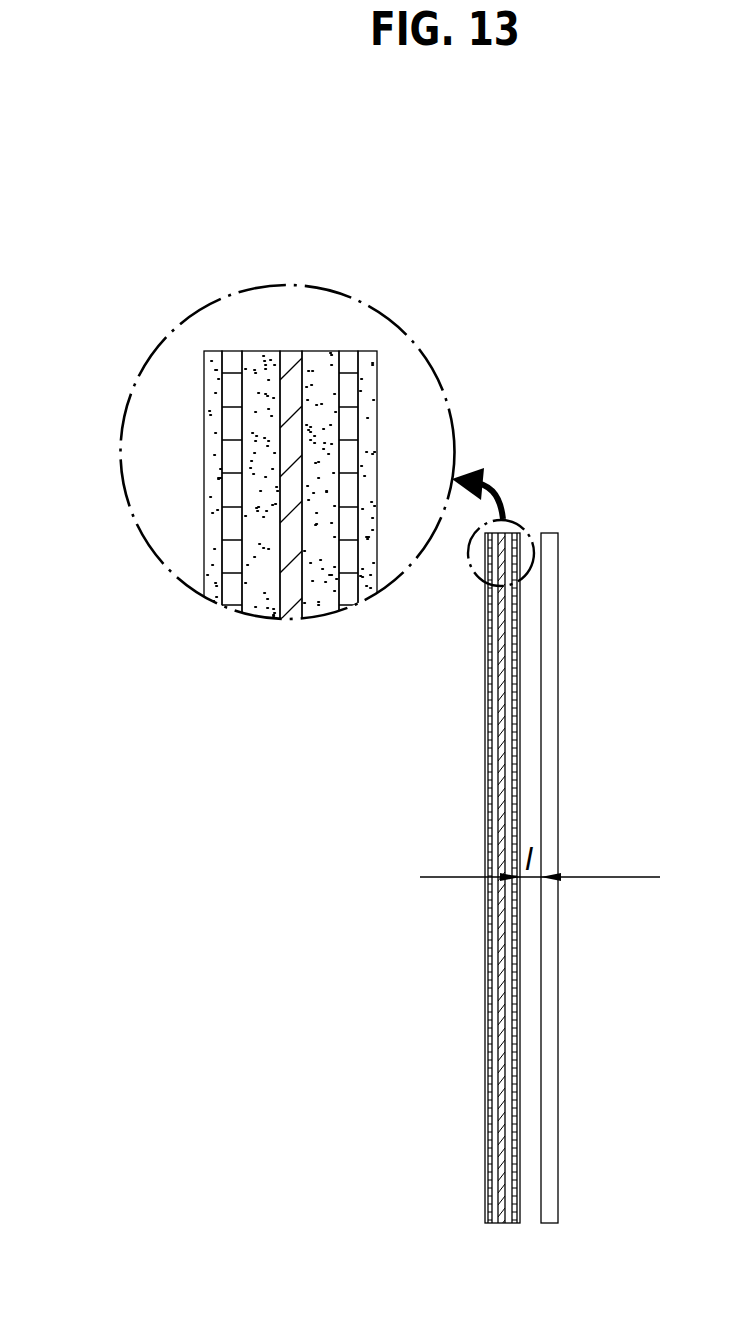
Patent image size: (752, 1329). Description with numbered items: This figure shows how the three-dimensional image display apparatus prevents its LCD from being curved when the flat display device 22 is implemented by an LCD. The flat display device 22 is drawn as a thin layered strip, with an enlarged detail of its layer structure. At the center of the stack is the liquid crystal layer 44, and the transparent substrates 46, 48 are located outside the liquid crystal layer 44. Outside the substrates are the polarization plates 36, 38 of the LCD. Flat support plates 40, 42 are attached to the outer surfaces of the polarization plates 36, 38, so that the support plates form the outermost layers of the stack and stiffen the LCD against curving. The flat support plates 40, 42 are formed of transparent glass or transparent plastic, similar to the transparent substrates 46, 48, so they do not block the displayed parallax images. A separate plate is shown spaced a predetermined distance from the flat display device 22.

The flat display device 22 is at (484, 716).
The polarization plate 36 is at (232, 364).
The polarization plate 38 is at (348, 362).
The flat support plate 40 is at (215, 398).
The flat support plate 42 is at (367, 387).
The liquid crystal layer 44 is at (292, 360).
The transparent substrate 46 is at (260, 360).
The transparent substrate 48 is at (322, 363).